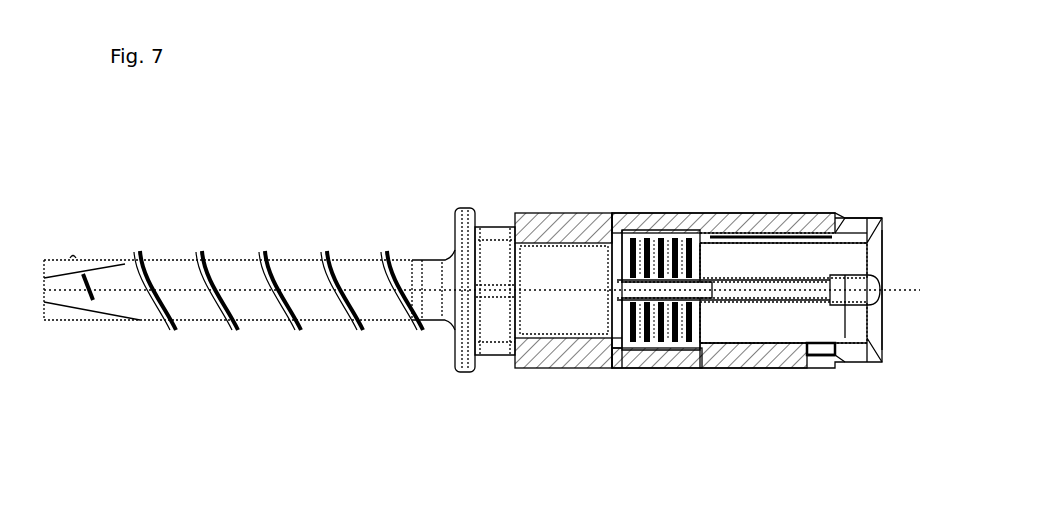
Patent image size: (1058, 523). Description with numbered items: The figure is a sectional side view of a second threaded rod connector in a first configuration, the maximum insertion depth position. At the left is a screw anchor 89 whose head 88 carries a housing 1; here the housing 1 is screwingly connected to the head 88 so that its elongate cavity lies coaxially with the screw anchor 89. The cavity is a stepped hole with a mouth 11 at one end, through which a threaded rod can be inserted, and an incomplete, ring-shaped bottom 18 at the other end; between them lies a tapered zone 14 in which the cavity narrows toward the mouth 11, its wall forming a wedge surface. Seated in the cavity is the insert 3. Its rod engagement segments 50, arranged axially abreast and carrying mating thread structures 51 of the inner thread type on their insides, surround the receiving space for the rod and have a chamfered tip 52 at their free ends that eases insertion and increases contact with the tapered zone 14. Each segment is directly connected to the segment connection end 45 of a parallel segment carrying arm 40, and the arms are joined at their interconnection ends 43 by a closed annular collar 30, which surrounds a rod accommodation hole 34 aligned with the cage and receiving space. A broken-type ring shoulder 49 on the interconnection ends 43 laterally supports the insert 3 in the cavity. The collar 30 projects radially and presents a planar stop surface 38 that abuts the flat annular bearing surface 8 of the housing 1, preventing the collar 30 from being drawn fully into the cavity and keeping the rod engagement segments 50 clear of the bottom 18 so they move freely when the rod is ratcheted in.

The screw anchor 89 is at (244, 260).
The head 88 is at (494, 250).
The housing 1 is at (555, 228).
The tapered zone 14 is at (710, 372).
The collar 30 is at (862, 362).
The segment carrying arm 40 is at (750, 258).
The insert 3 is at (785, 258).
The rod engagement segment 50 is at (660, 250).
The mating thread structure 51 is at (660, 330).
The segment connection end 45 is at (712, 257).
The interconnection end 43 is at (824, 257).
The ring shoulder 49 is at (813, 238).
The bearing surface 8 is at (842, 215).
The mouth 11 is at (895, 262).
The bottom 18 is at (612, 347).
The chamfered tip 52 is at (617, 356).
The stop surface 38 is at (825, 355).
The rod accommodation hole 34 is at (855, 316).